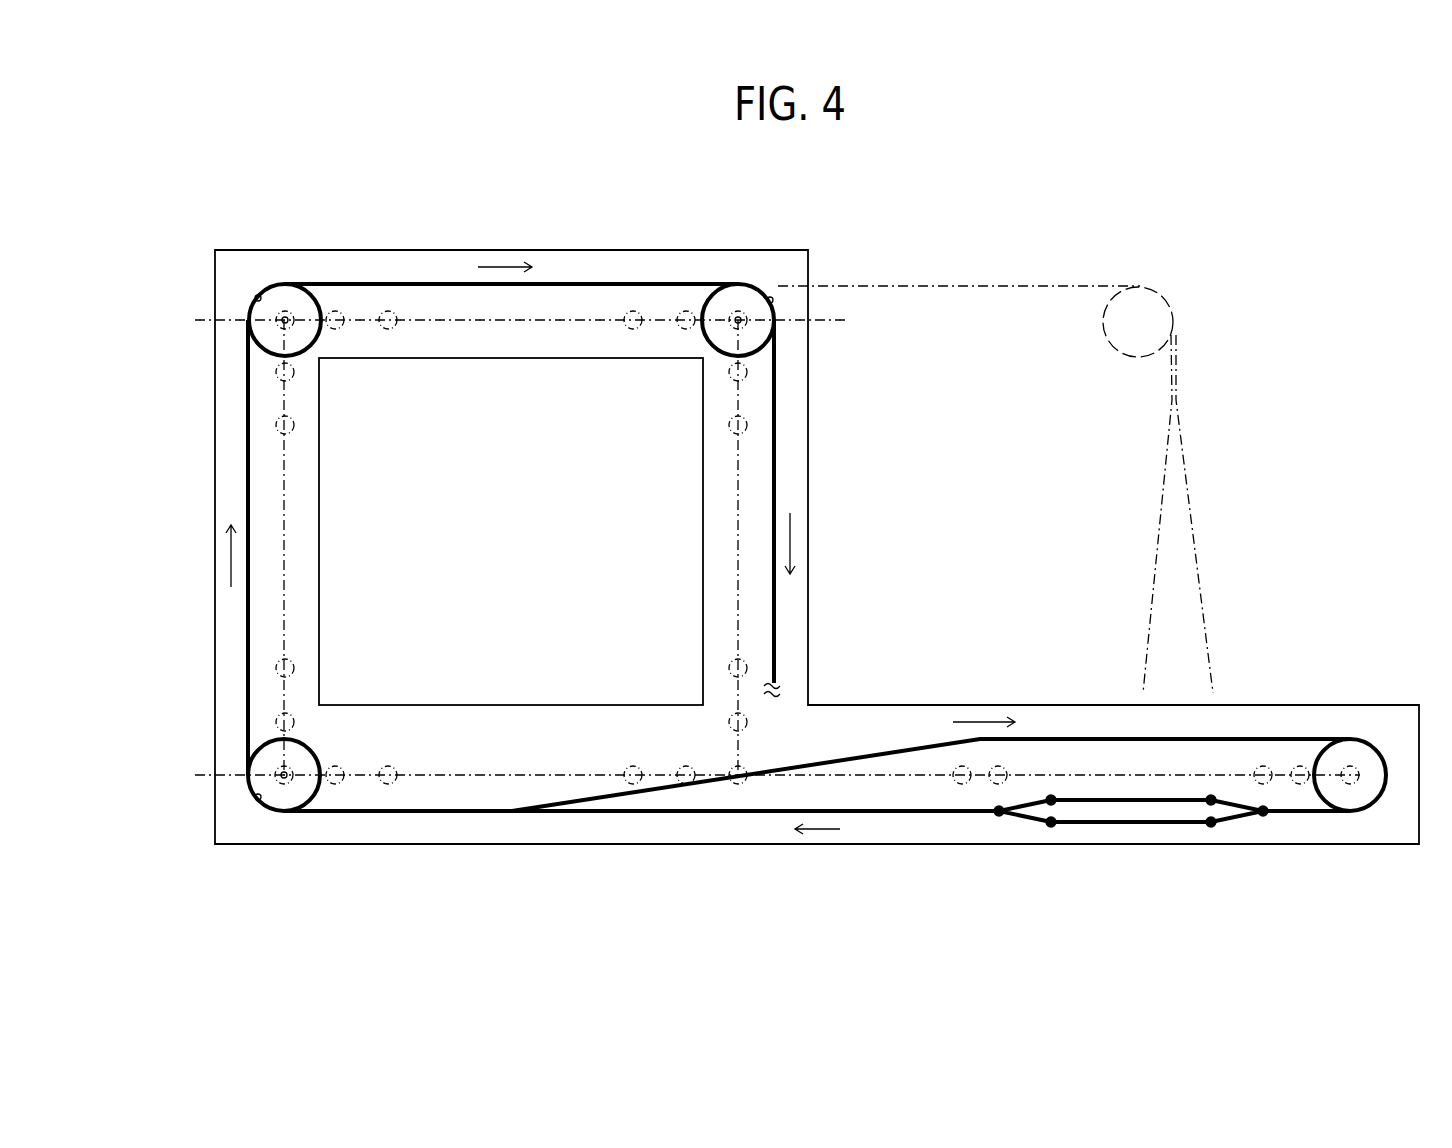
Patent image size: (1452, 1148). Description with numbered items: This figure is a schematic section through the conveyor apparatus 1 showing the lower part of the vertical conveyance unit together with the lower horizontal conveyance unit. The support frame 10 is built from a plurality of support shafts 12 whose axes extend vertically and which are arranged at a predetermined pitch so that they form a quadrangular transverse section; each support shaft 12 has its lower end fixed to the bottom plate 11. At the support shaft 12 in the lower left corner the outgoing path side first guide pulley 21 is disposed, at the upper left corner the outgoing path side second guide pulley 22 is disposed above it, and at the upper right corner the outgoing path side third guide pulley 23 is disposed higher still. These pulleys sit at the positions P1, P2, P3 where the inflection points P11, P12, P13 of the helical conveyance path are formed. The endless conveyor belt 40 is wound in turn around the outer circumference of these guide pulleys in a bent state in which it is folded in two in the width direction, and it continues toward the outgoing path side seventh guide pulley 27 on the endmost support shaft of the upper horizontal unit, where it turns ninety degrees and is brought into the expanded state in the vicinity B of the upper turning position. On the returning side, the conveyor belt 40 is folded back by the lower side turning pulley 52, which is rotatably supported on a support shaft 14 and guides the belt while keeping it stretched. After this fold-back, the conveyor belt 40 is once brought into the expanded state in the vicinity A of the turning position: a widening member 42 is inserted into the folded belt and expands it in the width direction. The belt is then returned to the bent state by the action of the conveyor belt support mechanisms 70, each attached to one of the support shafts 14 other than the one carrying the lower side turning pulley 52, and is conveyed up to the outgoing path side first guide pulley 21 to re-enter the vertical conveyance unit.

The conveyor apparatus 1 is at (942, 232).
The support frame 10 is at (575, 297).
The bottom plate 11 is at (512, 828).
The support shaft 12 is at (388, 311).
The support shaft 14 is at (996, 786).
The outgoing path side first guide pulley 21 is at (283, 802).
The outgoing path side second guide pulley 22 is at (279, 298).
The outgoing path side third guide pulley 23 is at (741, 300).
The outgoing path side seventh guide pulley 27 is at (1178, 305).
The conveyor belt 40 is at (448, 814).
The widening member 42 is at (1088, 824).
The lower side turning pulley 52 is at (1358, 748).
The conveyor belt support mechanism 70 is at (999, 818).
The vicinity of the turning position A is at (1165, 824).
The vicinity of the turning position B is at (1198, 590).
The position P1 is at (270, 775).
The position P2 is at (270, 320).
The position P3 is at (780, 322).
The inflection point P11 is at (258, 797).
The inflection point P12 is at (258, 298).
The inflection point P13 is at (770, 300).